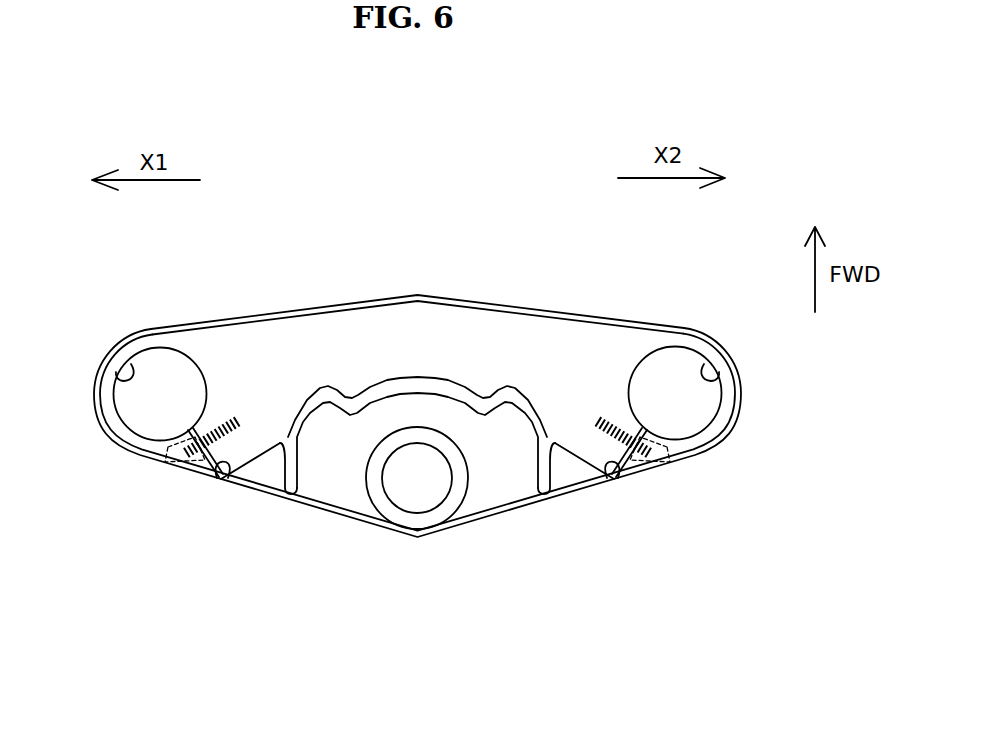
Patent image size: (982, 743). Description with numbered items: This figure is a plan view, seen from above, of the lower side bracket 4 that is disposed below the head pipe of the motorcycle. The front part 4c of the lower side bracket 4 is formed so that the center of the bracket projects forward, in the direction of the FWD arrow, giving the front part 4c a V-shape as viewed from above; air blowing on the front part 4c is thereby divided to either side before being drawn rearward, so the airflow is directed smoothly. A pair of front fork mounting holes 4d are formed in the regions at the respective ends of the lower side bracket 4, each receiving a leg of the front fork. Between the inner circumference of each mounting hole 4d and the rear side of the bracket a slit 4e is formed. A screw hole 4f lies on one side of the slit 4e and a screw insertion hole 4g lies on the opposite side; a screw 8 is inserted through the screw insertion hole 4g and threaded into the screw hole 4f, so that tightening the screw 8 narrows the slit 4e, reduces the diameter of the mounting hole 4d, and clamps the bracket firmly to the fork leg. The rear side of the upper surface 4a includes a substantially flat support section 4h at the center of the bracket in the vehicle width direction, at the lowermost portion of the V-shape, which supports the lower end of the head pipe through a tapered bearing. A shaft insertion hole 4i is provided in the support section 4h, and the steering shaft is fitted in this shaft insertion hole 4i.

The lower side bracket 4 is at (507, 483).
The upper surface 4a is at (266, 433).
The front part 4c is at (281, 301).
The front fork mounting hole 4d is at (131, 364).
The slit 4e is at (222, 481).
The screw hole 4f is at (228, 422).
The screw insertion hole 4g is at (167, 502).
The support section 4h is at (380, 490).
The shaft insertion hole 4i is at (433, 497).
The screw 8 is at (171, 470).